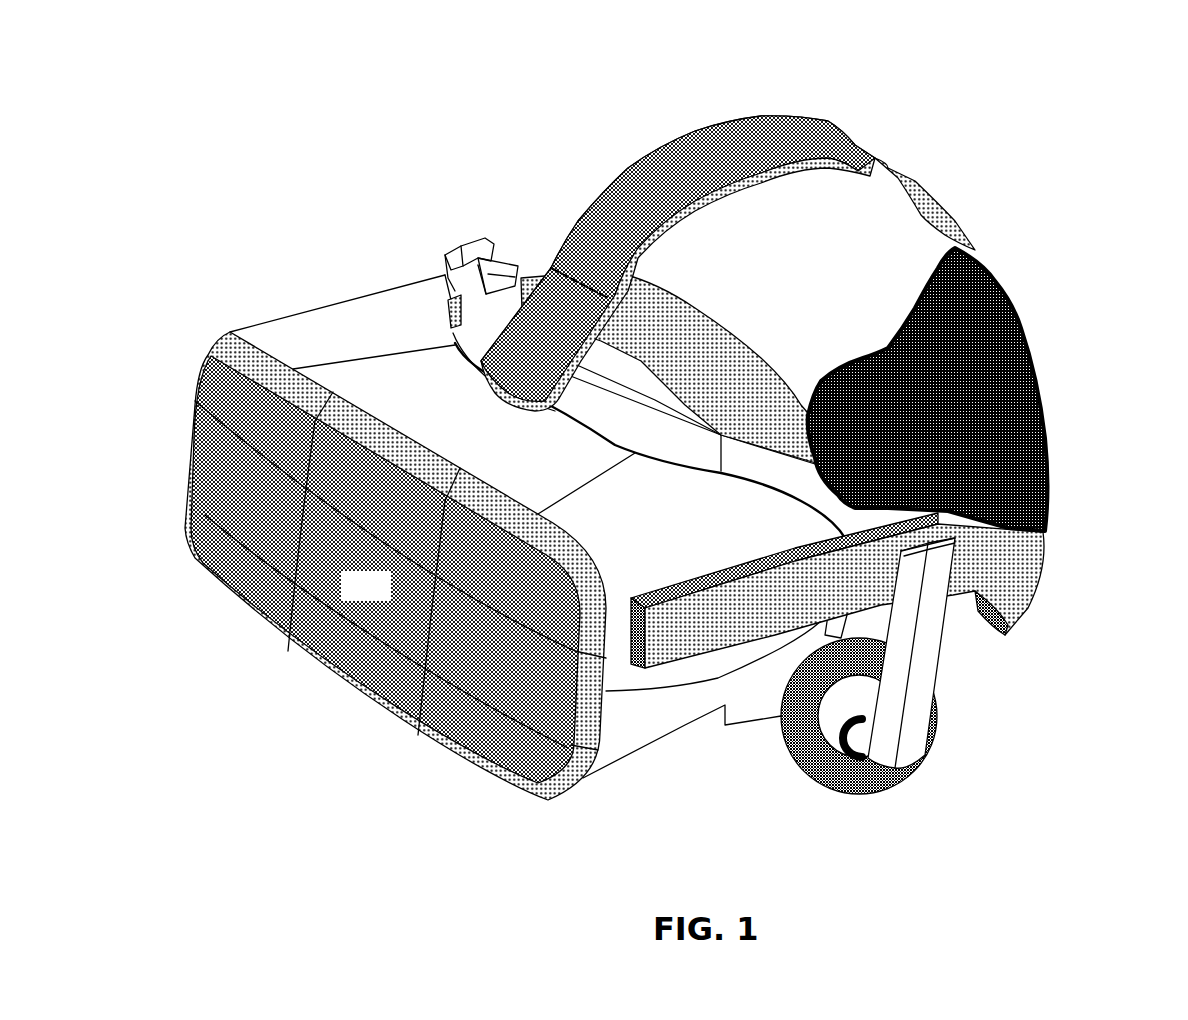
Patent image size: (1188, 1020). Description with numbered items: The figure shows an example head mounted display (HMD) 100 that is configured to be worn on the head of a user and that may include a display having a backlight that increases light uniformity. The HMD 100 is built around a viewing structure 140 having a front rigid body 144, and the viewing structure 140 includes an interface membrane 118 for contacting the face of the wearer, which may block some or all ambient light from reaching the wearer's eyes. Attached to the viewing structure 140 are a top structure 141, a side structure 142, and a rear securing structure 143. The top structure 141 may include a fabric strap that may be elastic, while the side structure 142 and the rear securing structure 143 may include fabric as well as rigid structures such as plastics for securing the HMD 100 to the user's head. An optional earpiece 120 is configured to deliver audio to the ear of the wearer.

The head mounted display 100 is at (1159, 39).
The interface membrane 118 is at (510, 260).
The earpiece 120 is at (920, 751).
The viewing structure 140 is at (404, 328).
The top structure 141 is at (823, 120).
The side structure 142 is at (710, 307).
The rear securing structure 143 is at (1020, 332).
The front rigid body 144 is at (374, 590).